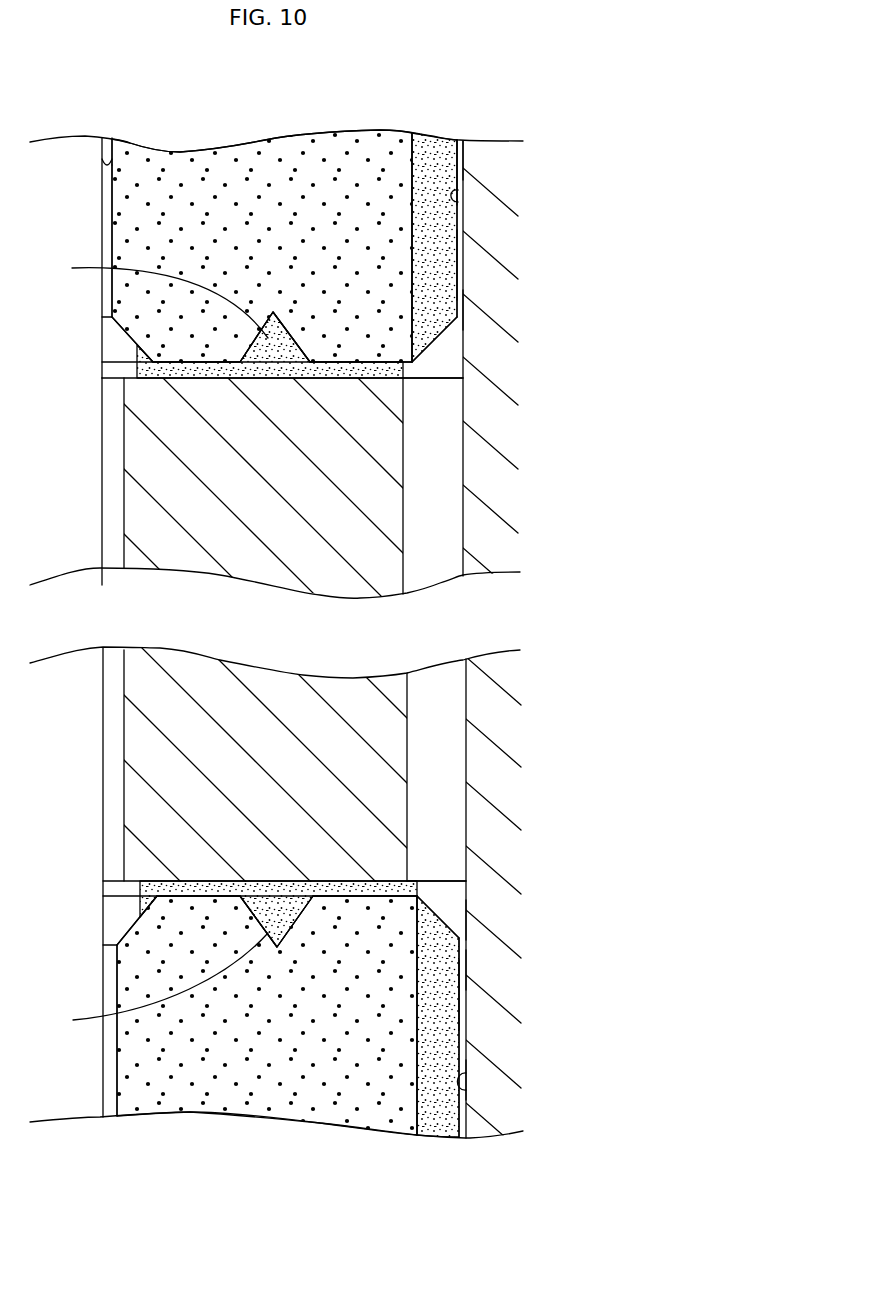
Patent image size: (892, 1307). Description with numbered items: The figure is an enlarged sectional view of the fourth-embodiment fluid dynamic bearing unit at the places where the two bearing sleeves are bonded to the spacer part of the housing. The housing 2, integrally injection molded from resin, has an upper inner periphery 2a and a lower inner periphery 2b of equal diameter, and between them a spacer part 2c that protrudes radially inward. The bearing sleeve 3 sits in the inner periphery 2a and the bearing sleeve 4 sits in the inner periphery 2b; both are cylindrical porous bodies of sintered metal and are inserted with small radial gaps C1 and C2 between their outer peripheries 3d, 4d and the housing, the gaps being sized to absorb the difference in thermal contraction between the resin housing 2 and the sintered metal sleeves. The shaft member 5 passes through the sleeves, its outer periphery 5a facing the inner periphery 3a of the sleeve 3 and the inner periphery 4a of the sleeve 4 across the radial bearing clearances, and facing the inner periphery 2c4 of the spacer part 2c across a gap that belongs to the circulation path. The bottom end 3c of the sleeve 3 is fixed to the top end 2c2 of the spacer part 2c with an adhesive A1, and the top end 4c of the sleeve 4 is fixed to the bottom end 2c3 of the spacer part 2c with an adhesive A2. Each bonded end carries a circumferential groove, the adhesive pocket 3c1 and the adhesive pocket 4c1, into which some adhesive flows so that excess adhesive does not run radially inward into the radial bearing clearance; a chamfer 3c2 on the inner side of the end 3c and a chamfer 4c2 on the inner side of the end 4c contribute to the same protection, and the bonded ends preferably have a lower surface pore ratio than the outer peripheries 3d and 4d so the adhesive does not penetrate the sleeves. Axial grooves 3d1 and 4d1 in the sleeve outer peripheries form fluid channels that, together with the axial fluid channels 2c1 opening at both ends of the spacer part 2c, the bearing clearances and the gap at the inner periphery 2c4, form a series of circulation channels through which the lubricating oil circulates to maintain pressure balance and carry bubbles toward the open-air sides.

The housing 2 is at (494, 157).
The inner periphery of housing 2a is at (460, 197).
The inner periphery of housing 2b is at (467, 1092).
The spacer part 2c is at (365, 527).
The fluid channel 2c1 is at (445, 493).
The top end of spacer part 2c2 is at (330, 380).
The bottom end of spacer part 2c3 is at (363, 893).
The inner periphery of spacer part 2c4 is at (122, 492).
The bearing sleeve 3 is at (361, 155).
The inner periphery of bearing sleeve 3a is at (112, 217).
The bottom end of bearing sleeve 3c is at (330, 380).
The adhesive pocket 3c1 is at (262, 366).
The chamfer 3c2 is at (128, 332).
The outer periphery of bearing sleeve 3d is at (460, 218).
The axial groove 3d1 is at (438, 271).
The bearing sleeve 4 is at (337, 1105).
The inner periphery of bearing sleeve 4a is at (115, 977).
The top end of bearing sleeve 4c is at (342, 888).
The adhesive pocket 4c1 is at (276, 918).
The chamfer 4c2 is at (132, 928).
The outer periphery of bearing sleeve 4d is at (462, 1044).
The axial groove 4d1 is at (441, 998).
The shaft member 5 is at (61, 160).
The outer periphery of shaft member 5a is at (116, 165).
The adhesive A1 is at (156, 297).
The adhesive A2 is at (156, 984).
The radial gap C1 is at (469, 168).
The radial gap C2 is at (468, 973).